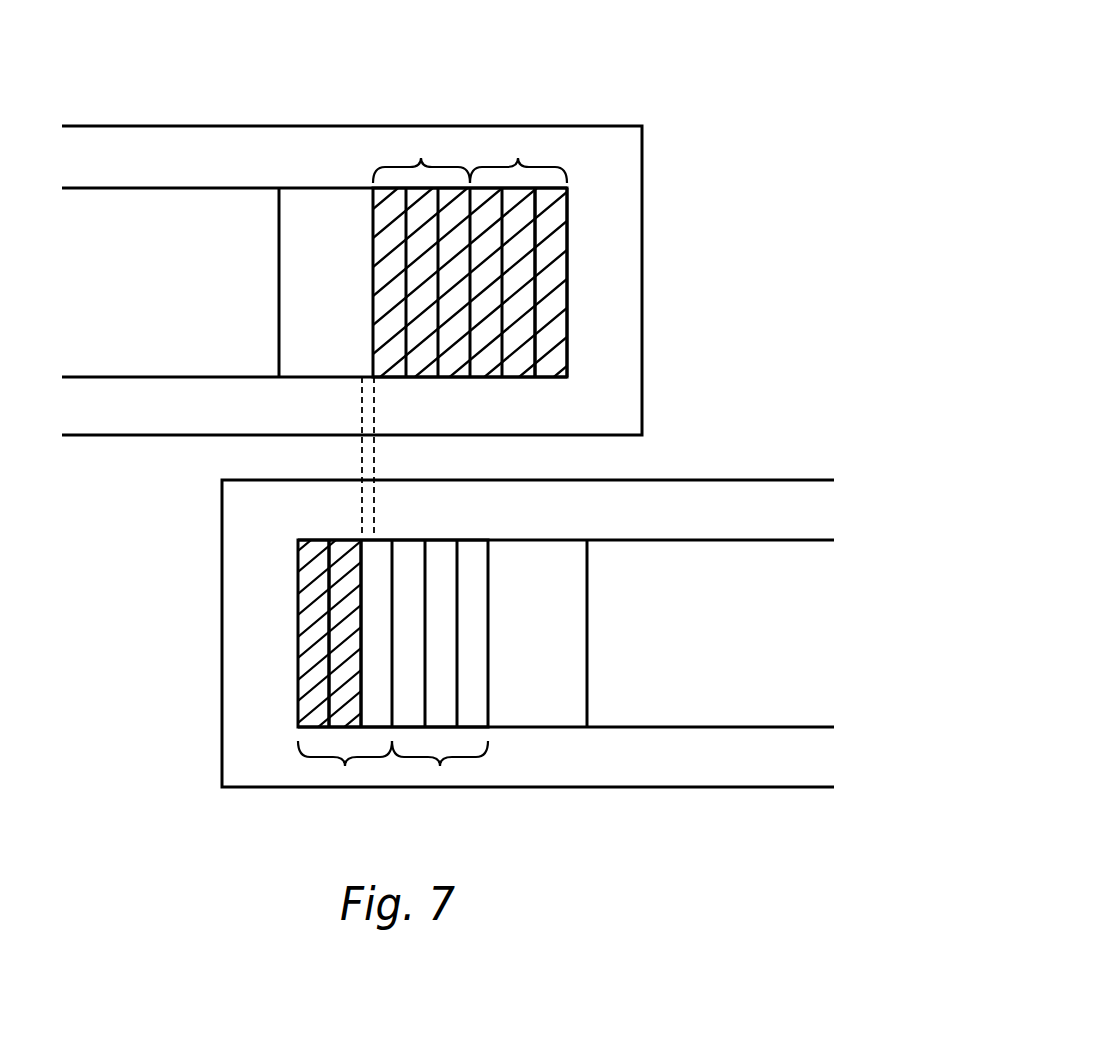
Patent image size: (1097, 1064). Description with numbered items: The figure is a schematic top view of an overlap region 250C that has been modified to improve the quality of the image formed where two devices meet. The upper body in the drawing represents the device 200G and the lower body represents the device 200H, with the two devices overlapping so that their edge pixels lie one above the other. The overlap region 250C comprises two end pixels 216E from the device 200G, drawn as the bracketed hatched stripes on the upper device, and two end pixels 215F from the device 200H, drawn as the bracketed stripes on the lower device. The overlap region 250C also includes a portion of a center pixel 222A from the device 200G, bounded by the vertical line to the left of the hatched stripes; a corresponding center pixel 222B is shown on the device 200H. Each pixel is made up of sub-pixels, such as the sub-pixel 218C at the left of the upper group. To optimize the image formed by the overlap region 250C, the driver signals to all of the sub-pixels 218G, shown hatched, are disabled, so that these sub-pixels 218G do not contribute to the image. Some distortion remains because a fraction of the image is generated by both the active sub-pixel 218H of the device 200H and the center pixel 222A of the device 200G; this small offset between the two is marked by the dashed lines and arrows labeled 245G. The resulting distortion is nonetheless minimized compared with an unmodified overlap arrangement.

The overlap region 250C is at (765, 75).
The device 200G is at (620, 127).
The device 200H is at (777, 495).
The center pixel 222A is at (320, 187).
The second region boundary 222B is at (542, 708).
The sub-pixel 218C is at (388, 216).
The sub-pixel 218G is at (556, 262).
The sub-pixel 218H is at (378, 548).
The end pixel 216E is at (421, 160).
The end pixel 215F is at (344, 764).
The gap / offset 245G is at (384, 407).